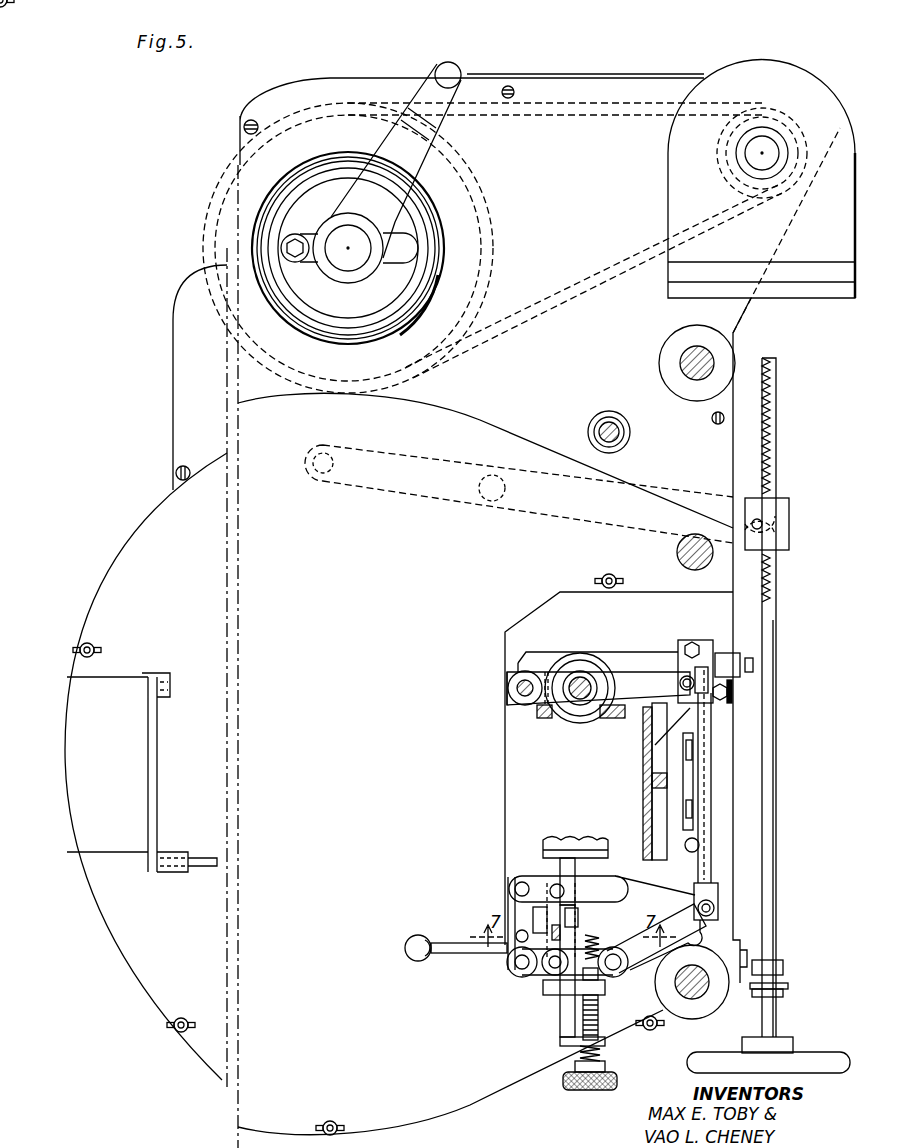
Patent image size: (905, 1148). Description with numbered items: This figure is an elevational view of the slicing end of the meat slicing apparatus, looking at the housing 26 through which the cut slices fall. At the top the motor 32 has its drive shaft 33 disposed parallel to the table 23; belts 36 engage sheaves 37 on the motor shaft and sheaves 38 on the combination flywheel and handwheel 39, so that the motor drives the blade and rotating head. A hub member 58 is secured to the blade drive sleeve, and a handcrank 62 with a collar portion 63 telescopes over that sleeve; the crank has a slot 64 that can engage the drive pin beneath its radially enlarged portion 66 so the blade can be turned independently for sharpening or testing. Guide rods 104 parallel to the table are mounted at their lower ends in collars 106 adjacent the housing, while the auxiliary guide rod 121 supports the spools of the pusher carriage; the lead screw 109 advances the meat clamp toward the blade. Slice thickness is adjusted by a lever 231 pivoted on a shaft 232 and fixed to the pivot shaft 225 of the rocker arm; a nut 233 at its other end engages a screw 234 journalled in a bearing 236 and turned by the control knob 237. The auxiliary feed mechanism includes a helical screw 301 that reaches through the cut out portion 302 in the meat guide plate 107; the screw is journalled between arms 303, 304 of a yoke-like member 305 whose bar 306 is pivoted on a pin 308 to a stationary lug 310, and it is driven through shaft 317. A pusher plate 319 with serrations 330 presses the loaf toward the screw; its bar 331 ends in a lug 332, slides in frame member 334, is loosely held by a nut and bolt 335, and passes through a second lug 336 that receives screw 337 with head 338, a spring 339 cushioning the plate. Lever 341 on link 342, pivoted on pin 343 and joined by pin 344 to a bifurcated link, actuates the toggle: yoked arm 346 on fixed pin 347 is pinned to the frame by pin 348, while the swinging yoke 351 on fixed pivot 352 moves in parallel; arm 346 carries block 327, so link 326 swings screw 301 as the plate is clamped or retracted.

The housing 26 is at (172, 353).
The motor 32 is at (749, 69).
The drive shaft 33 is at (759, 147).
The sheaves 37 is at (717, 166).
The belts 36 is at (568, 296).
The sheaves 38 is at (471, 196).
The combination flywheel and handwheel 39 is at (493, 212).
The hub member 58 is at (370, 279).
The handcrank 62 is at (428, 143).
The collar portion 63 is at (358, 226).
The slot 64 is at (395, 224).
The radially enlarged portion 66 is at (296, 234).
The guide rods 104 is at (676, 364).
The collars 106 is at (672, 346).
The meat guide plate 107 is at (545, 719).
The lead screw 109 is at (632, 432).
The auxiliary guide rod 121 is at (688, 560).
The pivot shaft 225 is at (323, 463).
The lever 231 is at (427, 458).
The shaft 232 is at (490, 478).
The nut 233 is at (788, 522).
The screw 234 is at (776, 652).
The bearing 236 is at (778, 976).
The control knob 237 is at (803, 1060).
The table 23 is at (642, 790).
The helical screw 301 is at (582, 654).
The cut out portion 302 is at (607, 719).
The arm 303 is at (638, 670).
The arm 304 is at (546, 670).
The yoke-like member 305 is at (507, 676).
The bar 306 is at (515, 690).
The pin 308 is at (506, 704).
The stationary lug 310 is at (660, 647).
The shaft 317 is at (590, 682).
The pusher plate 319 is at (545, 838).
The link 326 is at (709, 810).
The block 327 is at (713, 890).
The grooves or serrations 330 is at (567, 838).
The bar 331 is at (570, 868).
The lug 332 is at (562, 1041).
The frame member 334 is at (552, 977).
The nut and bolt 335 is at (579, 922).
The lug 336 is at (600, 994).
The screw 337 is at (583, 1013).
The head 338 is at (576, 1085).
The spring 339 is at (580, 1055).
The lever 341 is at (452, 951).
The link 342 is at (511, 968).
The pin 343 is at (520, 970).
The pin 344 is at (518, 932).
The yoked arm 346 is at (507, 878).
The fixed pin 347 is at (666, 862).
The pin 348 is at (556, 886).
The swinging yoke 351 is at (600, 953).
The fixed pivot 352 is at (620, 968).